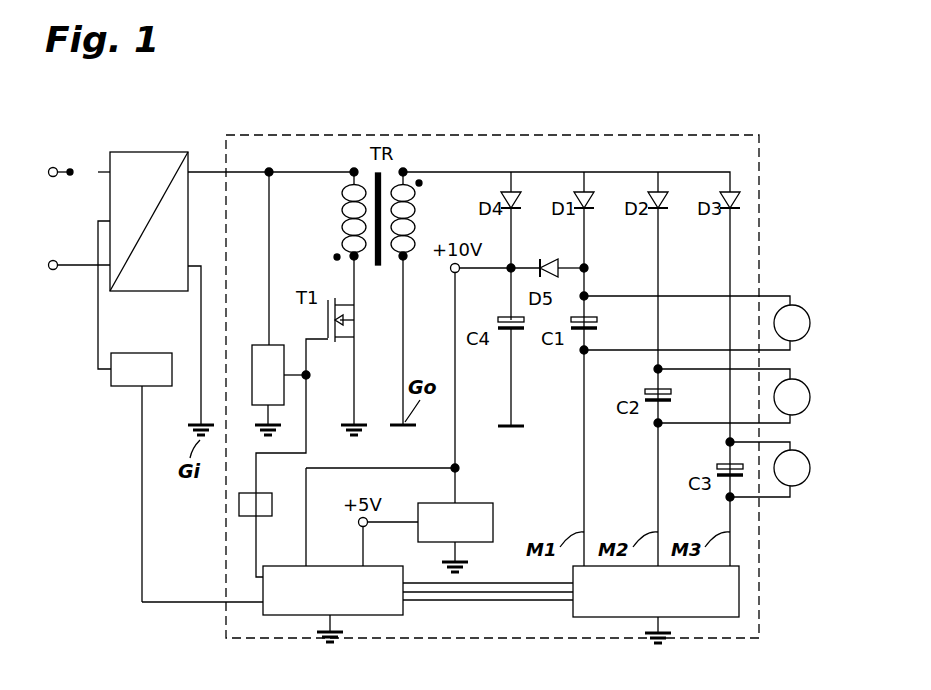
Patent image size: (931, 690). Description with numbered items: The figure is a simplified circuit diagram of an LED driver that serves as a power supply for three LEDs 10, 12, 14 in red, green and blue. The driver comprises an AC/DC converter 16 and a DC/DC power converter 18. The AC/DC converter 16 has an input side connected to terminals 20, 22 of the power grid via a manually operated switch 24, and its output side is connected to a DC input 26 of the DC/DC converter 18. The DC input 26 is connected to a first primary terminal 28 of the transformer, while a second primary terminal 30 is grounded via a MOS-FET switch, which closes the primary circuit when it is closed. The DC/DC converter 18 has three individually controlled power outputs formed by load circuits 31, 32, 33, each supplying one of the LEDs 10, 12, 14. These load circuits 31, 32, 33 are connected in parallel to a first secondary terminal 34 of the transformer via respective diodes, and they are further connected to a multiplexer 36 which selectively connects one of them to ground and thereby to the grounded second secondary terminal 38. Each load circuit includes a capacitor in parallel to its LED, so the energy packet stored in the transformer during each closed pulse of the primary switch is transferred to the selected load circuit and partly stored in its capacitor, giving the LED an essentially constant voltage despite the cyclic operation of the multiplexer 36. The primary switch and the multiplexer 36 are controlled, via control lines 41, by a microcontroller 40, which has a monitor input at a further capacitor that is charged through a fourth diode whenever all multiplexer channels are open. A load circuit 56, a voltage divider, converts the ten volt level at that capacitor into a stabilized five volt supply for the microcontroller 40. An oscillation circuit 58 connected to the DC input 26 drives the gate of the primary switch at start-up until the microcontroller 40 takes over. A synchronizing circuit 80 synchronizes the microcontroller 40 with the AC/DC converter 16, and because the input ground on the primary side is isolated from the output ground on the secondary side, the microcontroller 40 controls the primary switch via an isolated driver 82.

The LED 10 is at (798, 306).
The LED 12 is at (803, 409).
The LED 14 is at (800, 484).
The AC/DC converter 16 is at (165, 160).
The DC/DC power converter 18 is at (762, 170).
The terminal 20 is at (56, 166).
The terminal 22 is at (55, 272).
The manually operated switch 24 is at (73, 171).
The DC input 26 is at (207, 170).
The first primary terminal 28 is at (353, 168).
The second primary terminal 30 is at (333, 270).
The load circuit 31 is at (682, 295).
The load circuit 32 is at (686, 425).
The load circuit 33 is at (768, 498).
The first secondary terminal 34 is at (404, 168).
The multiplexer 36 is at (612, 618).
The second secondary terminal 38 is at (406, 260).
The microcontroller 40 is at (383, 616).
The control lines 41 is at (466, 584).
The load circuit 56 is at (493, 518).
The oscillation circuit 58 is at (262, 344).
The synchronizing circuit 80 is at (128, 388).
The isolated driver 82 is at (239, 507).